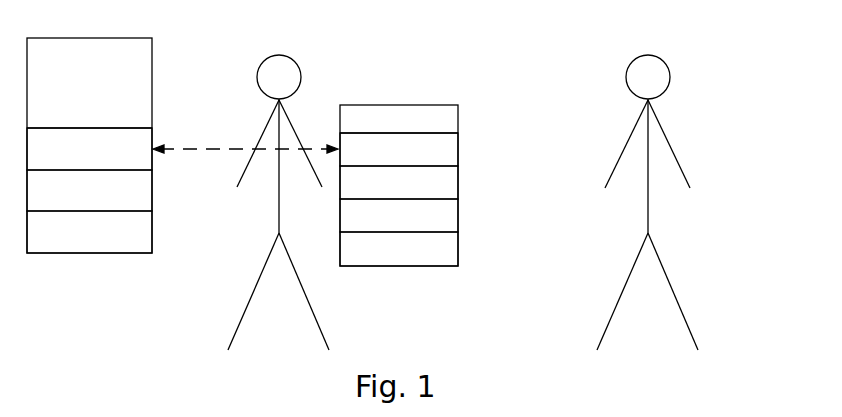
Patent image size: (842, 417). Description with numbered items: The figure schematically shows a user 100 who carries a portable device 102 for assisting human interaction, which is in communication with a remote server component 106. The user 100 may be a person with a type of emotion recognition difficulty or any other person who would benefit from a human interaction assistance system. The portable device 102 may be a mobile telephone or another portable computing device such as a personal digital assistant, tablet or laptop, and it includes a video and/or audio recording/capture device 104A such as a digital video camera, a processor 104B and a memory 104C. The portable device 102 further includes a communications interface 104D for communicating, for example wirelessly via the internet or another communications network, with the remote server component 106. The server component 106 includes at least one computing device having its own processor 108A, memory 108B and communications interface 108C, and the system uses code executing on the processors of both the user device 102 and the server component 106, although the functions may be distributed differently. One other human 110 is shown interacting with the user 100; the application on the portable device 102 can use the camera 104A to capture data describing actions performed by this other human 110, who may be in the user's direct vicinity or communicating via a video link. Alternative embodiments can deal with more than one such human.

The user 100 is at (257, 97).
The portable device 102 is at (406, 141).
The video and/or audio recording/capture device 104A is at (399, 249).
The processor 104B is at (399, 215).
The memory 104C is at (399, 182).
The communications interface 104D is at (399, 149).
The remote server component 106 is at (89, 184).
The processor 108A is at (89, 232).
The memory 108B is at (89, 190).
The communications interface 108C is at (89, 149).
The other human 110 is at (678, 82).